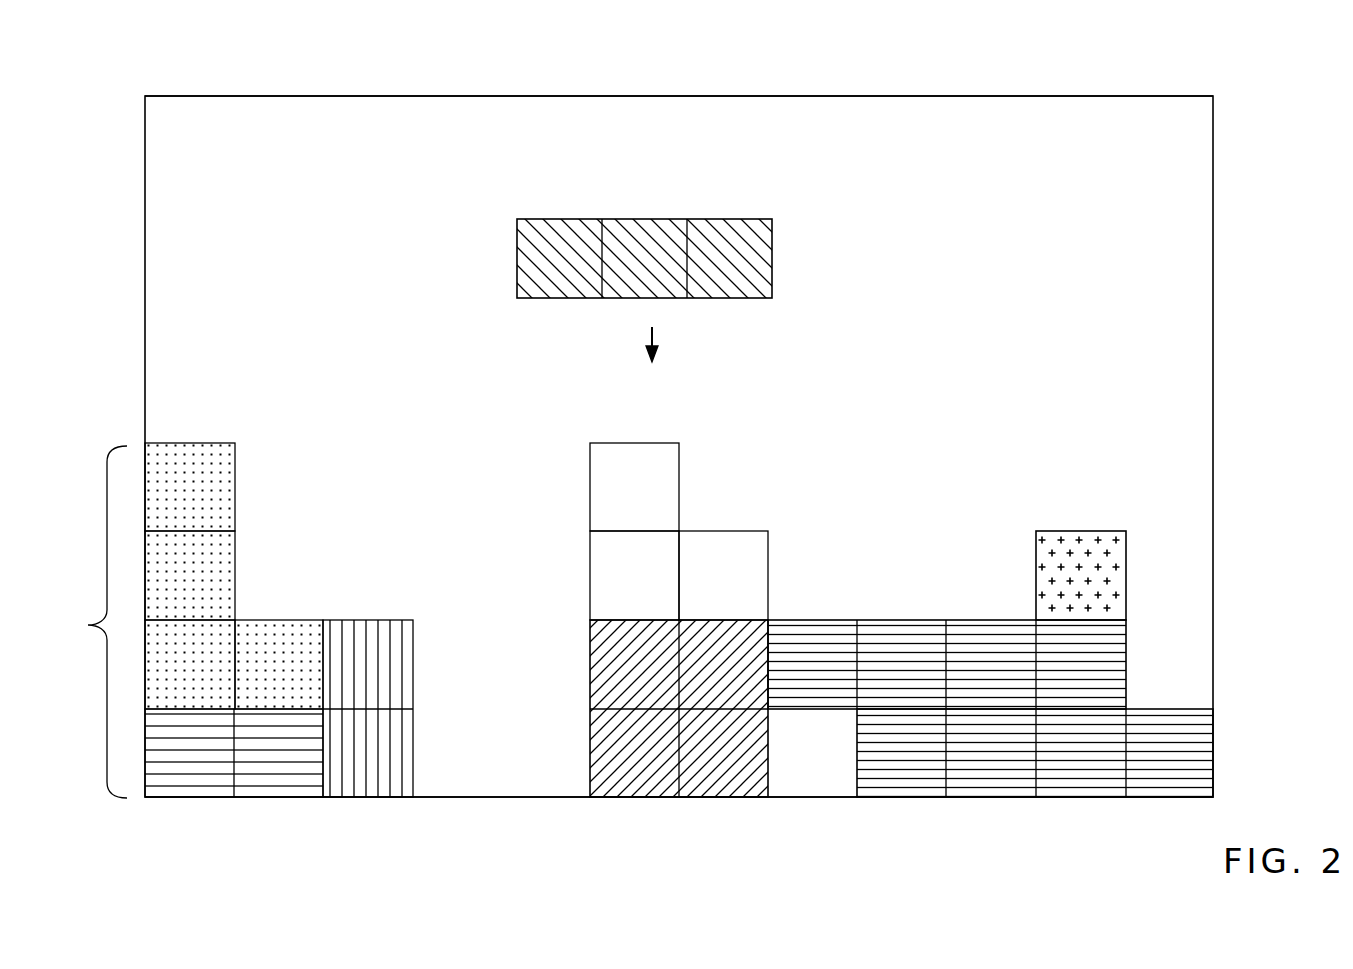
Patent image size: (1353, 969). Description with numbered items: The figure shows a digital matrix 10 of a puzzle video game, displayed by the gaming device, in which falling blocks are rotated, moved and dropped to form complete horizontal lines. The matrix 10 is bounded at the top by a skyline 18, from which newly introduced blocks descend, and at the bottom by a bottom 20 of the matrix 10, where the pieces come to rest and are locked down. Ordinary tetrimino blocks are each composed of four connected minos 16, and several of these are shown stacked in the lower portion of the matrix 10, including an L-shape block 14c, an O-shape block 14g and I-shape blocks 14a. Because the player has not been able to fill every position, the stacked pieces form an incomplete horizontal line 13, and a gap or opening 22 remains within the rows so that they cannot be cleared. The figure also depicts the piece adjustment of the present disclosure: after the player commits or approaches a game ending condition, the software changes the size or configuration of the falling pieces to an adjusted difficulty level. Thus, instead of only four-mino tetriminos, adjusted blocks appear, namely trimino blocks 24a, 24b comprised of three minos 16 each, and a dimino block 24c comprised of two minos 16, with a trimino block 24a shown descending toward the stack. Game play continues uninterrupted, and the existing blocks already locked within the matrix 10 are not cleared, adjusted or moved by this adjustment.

The digital matrix 10 is at (1280, 91).
The skyline 18 is at (1150, 91).
The bottom of the matrix 20 is at (840, 806).
The incomplete horizontal line 13 is at (279, 631).
The L-shape block 14c is at (237, 455).
The dimino block 24c is at (418, 638).
The trimino block 24a is at (728, 212).
The trimino block 24b is at (685, 465).
The O-shape block 14g is at (608, 800).
The I-shape block 14a is at (940, 613).
The mino 16 is at (1085, 528).
The gap or opening 22 is at (820, 782).